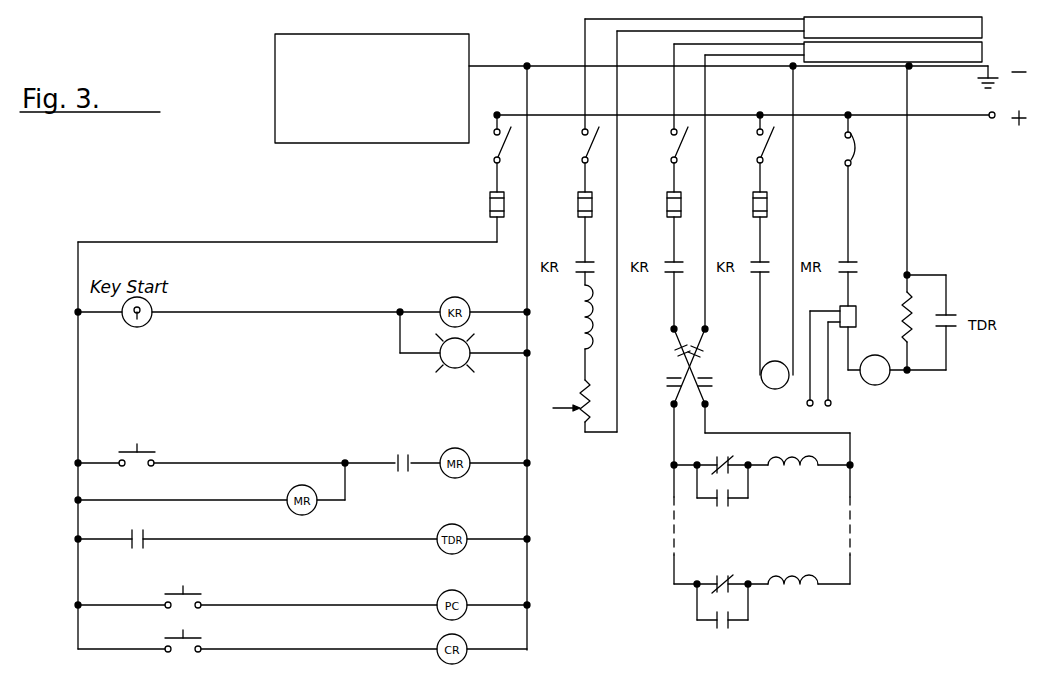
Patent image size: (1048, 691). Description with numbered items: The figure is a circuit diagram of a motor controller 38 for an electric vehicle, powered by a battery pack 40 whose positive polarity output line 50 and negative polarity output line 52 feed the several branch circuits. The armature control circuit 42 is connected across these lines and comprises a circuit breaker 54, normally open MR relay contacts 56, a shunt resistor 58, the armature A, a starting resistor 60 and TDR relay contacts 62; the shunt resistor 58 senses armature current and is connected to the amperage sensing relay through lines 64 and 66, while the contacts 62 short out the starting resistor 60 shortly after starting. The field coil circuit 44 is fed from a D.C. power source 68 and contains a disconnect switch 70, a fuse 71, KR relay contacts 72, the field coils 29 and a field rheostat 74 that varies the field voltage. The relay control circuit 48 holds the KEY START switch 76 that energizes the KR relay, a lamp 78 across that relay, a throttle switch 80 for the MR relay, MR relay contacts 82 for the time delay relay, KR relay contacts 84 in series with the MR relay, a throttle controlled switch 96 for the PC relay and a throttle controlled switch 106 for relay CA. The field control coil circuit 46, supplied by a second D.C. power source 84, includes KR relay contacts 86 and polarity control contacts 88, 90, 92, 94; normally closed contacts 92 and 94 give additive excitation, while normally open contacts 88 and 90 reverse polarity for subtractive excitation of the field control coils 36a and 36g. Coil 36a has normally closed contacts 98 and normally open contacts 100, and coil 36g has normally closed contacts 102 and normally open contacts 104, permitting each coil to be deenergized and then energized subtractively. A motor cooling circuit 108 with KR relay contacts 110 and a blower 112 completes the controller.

The field coils 29 is at (583, 325).
The field control coil 36a is at (804, 470).
The field control coil 36g is at (790, 576).
The motor controller 38 is at (222, 190).
The battery pack 40 is at (367, 130).
The armature control circuit 42 is at (952, 221).
The field coil circuit 44 is at (572, 422).
The field control coil circuit 46 is at (866, 485).
The relay control circuit 48 is at (356, 240).
The positive polarity output line 50 is at (942, 118).
The negative polarity output line 52 is at (940, 70).
The circuit breaker 54 is at (858, 148).
The MR relay contacts 56 is at (855, 258).
The shunt resistor 58 is at (857, 305).
The starting resistor 60 is at (902, 318).
The TDR relay contacts 62 is at (950, 318).
The line 64 is at (820, 393).
The line 66 is at (832, 402).
The D.C. power source 68 is at (982, 27).
The disconnect switch 70 is at (492, 148).
The fuse 71 is at (490, 208).
The KR relay contacts 72 is at (592, 258).
The field rheostat 74 is at (580, 394).
The KEY START switch 76 is at (146, 325).
The lamp 78 is at (455, 372).
The throttle switch 80 is at (150, 450).
The MR relay contacts 82 is at (148, 532).
The KR relay contacts / D.C. power source 84 is at (982, 50).
The KR relay contacts 86 is at (682, 258).
The polarity control contacts 88 is at (672, 345).
The polarity control contacts 90 is at (704, 350).
The polarity control contacts 92 is at (668, 382).
The polarity control contacts 94 is at (710, 384).
The throttle controlled switch 96 is at (198, 592).
The contacts 98 is at (717, 460).
The contacts 100 is at (716, 504).
The contacts 102 is at (712, 578).
The contacts 104 is at (714, 624).
The throttle controlled switch 106 is at (200, 636).
The motor cooling circuit 108 is at (750, 384).
The KR relay contacts 110 is at (767, 258).
The blower 112 is at (775, 361).